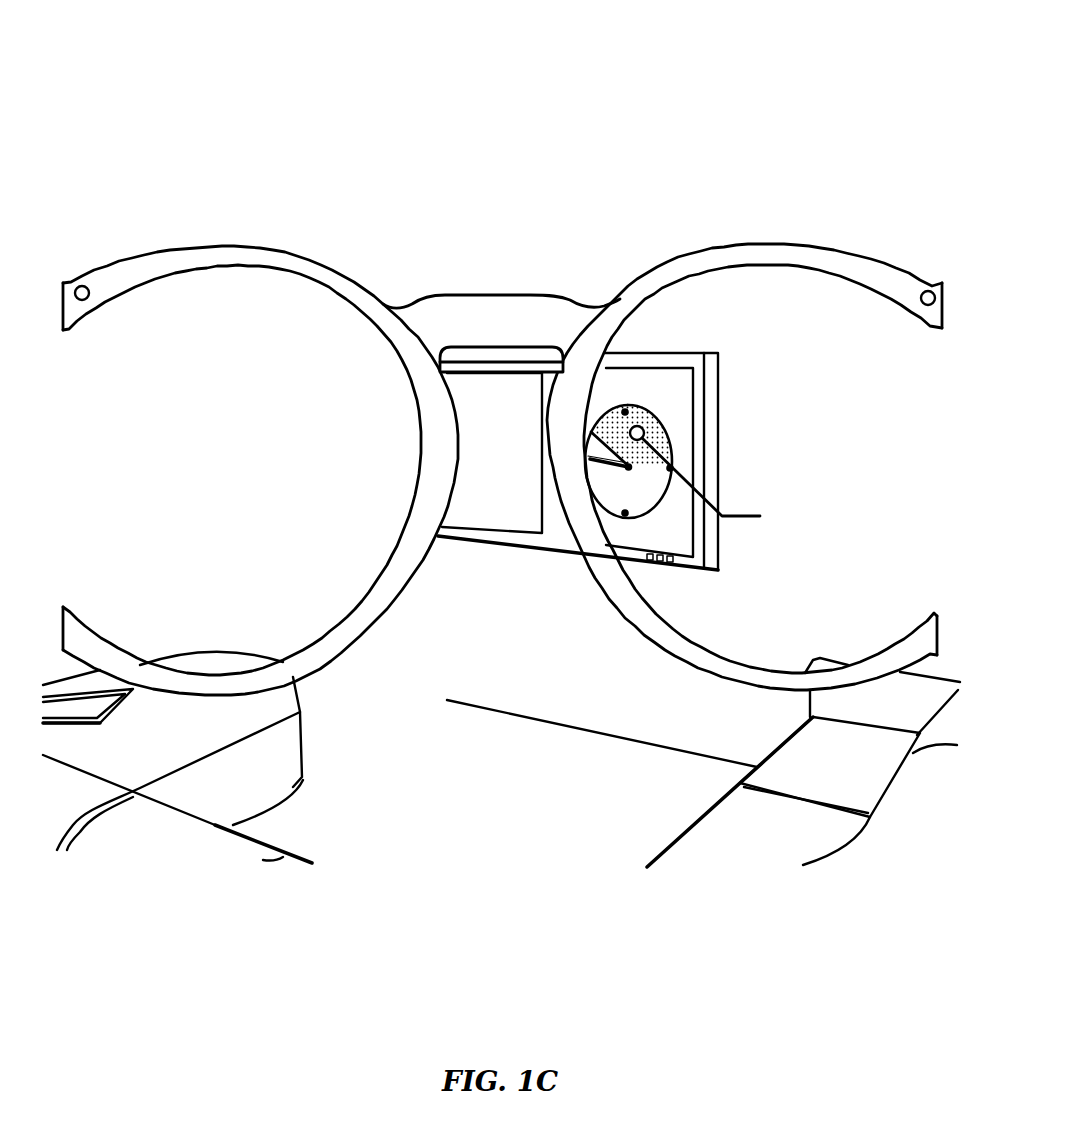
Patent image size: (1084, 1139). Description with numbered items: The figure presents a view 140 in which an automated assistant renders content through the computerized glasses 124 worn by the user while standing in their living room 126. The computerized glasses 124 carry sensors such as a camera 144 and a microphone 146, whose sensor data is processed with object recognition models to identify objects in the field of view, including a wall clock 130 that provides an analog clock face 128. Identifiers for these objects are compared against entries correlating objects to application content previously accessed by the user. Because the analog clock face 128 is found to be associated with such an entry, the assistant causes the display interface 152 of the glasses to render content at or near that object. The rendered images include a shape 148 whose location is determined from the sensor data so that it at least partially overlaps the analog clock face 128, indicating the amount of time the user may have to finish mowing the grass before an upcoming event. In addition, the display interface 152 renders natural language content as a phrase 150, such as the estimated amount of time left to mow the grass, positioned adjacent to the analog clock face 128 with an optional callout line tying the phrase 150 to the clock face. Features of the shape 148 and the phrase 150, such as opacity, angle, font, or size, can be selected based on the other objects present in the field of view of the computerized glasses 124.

The view 140 is at (207, 62).
The display interface 152 is at (244, 328).
The camera 144 is at (82, 301).
The microphone 146 is at (928, 290).
The computerized glasses 124 is at (519, 331).
The wall clock 130 is at (519, 483).
The analog clock face 128 is at (667, 503).
The shape 148 is at (666, 432).
The phrase 150 is at (805, 487).
The living room 126 is at (499, 781).